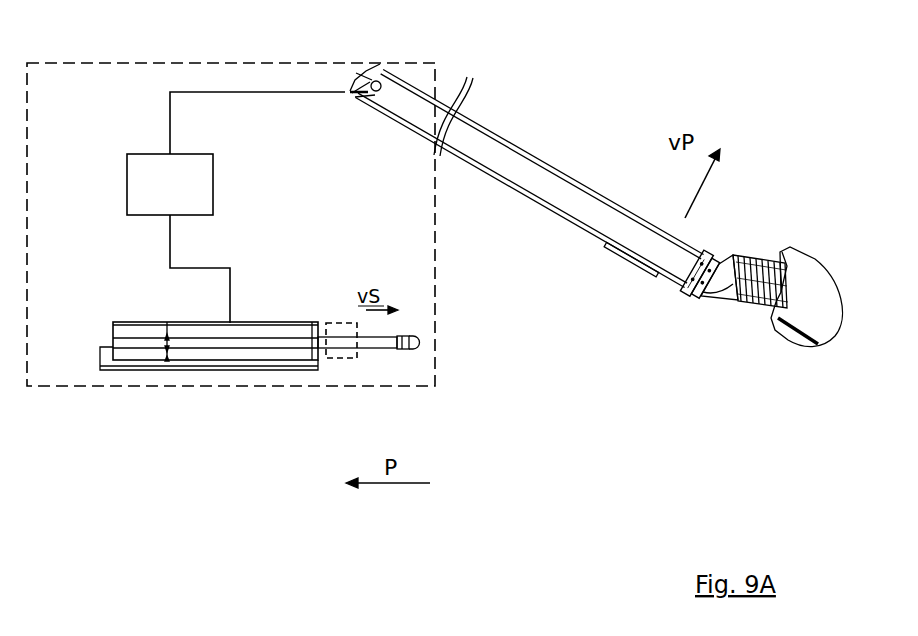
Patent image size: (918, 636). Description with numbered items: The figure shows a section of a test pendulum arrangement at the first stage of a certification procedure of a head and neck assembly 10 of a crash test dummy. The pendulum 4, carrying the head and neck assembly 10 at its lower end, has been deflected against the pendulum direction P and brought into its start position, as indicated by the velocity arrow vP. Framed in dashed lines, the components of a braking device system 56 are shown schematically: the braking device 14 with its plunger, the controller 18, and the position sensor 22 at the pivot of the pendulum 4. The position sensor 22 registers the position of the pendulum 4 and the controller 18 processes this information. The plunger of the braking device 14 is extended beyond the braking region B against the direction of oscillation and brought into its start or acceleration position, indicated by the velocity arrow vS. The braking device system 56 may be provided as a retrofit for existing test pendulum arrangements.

The pendulum 4 is at (521, 151).
The head and neck assembly 10 is at (770, 352).
The braking device 14 is at (168, 372).
The controller 18 is at (236, 207).
The position sensor 22 is at (377, 64).
The braking device system 56 is at (70, 388).
The braking region B is at (345, 360).